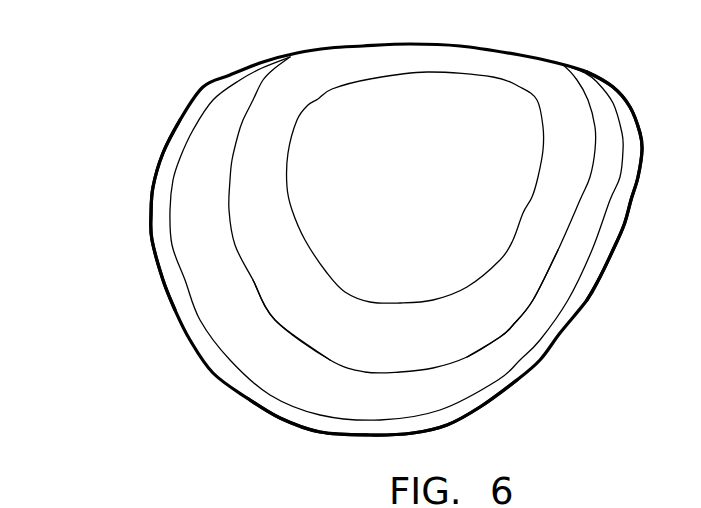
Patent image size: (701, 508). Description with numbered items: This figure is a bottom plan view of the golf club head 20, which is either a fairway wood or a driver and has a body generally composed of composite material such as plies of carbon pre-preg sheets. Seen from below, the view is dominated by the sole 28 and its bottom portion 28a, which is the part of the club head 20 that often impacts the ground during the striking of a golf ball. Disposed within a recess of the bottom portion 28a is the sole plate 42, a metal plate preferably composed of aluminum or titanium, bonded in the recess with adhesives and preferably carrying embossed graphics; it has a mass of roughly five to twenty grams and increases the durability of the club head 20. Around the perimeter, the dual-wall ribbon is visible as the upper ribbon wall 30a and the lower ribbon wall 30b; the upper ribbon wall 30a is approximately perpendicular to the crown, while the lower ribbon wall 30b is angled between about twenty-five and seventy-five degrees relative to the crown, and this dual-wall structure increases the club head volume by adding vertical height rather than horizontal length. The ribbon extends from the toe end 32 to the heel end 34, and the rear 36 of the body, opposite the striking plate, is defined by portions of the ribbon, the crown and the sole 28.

The golf club head 20 is at (553, 410).
The sole 28 is at (285, 283).
The bottom portion 28a is at (502, 298).
The upper ribbon wall 30a is at (173, 158).
The lower ribbon wall 30b is at (242, 100).
The toe end 32 is at (125, 197).
The heel end 34 is at (650, 200).
The rear 36 is at (350, 435).
The sole plate 42 is at (552, 87).